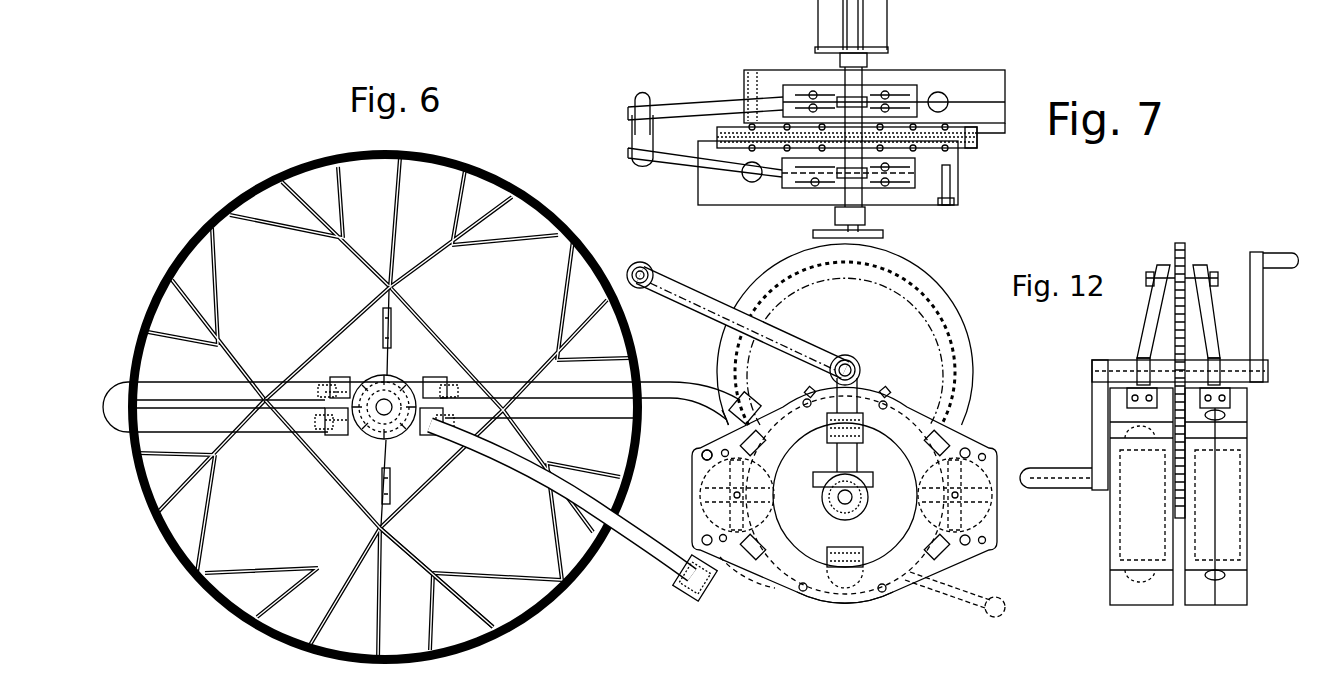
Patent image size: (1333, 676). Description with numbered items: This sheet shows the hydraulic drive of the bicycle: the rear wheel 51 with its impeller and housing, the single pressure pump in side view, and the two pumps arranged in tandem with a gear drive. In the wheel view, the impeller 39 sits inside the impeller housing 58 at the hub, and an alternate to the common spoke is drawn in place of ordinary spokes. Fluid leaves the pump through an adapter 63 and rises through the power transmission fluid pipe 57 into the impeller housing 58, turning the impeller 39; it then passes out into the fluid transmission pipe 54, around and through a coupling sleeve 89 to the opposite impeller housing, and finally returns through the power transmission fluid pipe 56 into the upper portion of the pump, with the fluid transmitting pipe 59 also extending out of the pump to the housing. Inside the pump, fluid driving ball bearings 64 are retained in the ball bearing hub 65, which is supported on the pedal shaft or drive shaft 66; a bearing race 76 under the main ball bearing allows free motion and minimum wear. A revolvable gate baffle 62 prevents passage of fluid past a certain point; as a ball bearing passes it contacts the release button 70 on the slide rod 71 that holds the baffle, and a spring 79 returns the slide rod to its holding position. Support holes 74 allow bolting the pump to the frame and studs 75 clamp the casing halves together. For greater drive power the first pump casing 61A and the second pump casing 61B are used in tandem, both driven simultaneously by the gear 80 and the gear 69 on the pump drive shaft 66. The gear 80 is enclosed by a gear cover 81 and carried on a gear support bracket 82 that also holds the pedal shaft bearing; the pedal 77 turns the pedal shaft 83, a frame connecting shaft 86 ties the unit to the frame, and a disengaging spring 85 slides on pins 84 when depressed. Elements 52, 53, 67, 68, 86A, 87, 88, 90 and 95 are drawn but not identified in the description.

In FIG. 6, the impeller 39 is at (398, 382).
In FIG. 6, the wheel 51 is at (548, 598).
In FIG. 6, the spoke 52 is at (418, 556).
In FIG. 6, the adjusting sleeve 53 is at (392, 490).
In FIG. 6, the fluid transmission pipe 54 is at (190, 380).
In FIG. 6, the power transmission fluid pipe 56 is at (485, 378).
In FIG. 6, the power transmission fluid pipe 57 is at (522, 470).
In FIG. 6, the impeller housing 58 is at (378, 380).
In FIG. 6, the fluid transmitting pipe 59 is at (330, 472).
In FIG. 6, the pump casing No. 1 61A is at (692, 470).
In FIG. 7, the pump casing No. 1 61A is at (705, 205).
In FIG. 6, the pump casing No. 2 61B is at (990, 442).
In FIG. 7, the pump casing No. 2 61B is at (1005, 78).
In FIG. 6, the revolvable gate baffle 62 is at (707, 522).
In FIG. 6, the adapter 63 is at (705, 600).
In FIG. 6, the fluid driving ball bearing 64 is at (843, 590).
In FIG. 6, the fluid driving ball bearing hub 65 is at (890, 565).
In FIG. 6, the pump drive shaft 66 is at (830, 515).
In FIG. 6, the hub bracket 67 is at (355, 436).
In FIG. 6, the adjusting sleeve 68 is at (395, 323).
In FIG. 6, the gear 69 is at (868, 510).
In FIG. 12, the gear 69 is at (1170, 497).
In FIG. 6, the release button 70 is at (765, 520).
In FIG. 6, the slide rod 71 is at (760, 595).
In FIG. 6, the support holes 74 is at (705, 452).
In FIG. 6, the studs 75 is at (725, 442).
In FIG. 6, the bearing race 76 is at (835, 438).
In FIG. 6, the pedal 77 is at (876, 483).
In FIG. 7, the pedal 77 is at (818, 30).
In FIG. 12, the pedal 77 is at (1075, 489).
In FIG. 6, the spring 79 is at (965, 565).
In FIG. 6, the gear 80 is at (965, 357).
In FIG. 7, the gear 80 is at (965, 142).
In FIG. 12, the gear 80 is at (1175, 455).
In FIG. 6, the gear cover 81 is at (717, 368).
In FIG. 7, the gear cover 81 is at (978, 146).
In FIG. 6, the gear support bracket 82 is at (690, 312).
In FIG. 7, the gear support bracket 82 is at (715, 105).
In FIG. 6, the pedal shaft 83 is at (862, 366).
In FIG. 7, the pedal shaft 83 is at (862, 75).
In FIG. 6, the pins 84 is at (888, 398).
In FIG. 7, the pins 84 is at (812, 186).
In FIG. 6, the disengaging spring 85 is at (802, 386).
In FIG. 7, the disengaging spring 85 is at (818, 193).
In FIG. 7, the frame connecting shaft 86 is at (640, 168).
In FIG. 7, the pin 86A is at (635, 112).
In FIG. 7, the arm 87 is at (717, 146).
In FIG. 7, the collar 88 is at (860, 190).
In FIG. 6, the coupling sleeve 89 is at (330, 352).
In FIG. 6, the bracket 90 is at (340, 377).
In FIG. 12, the shaft 95 is at (1215, 608).